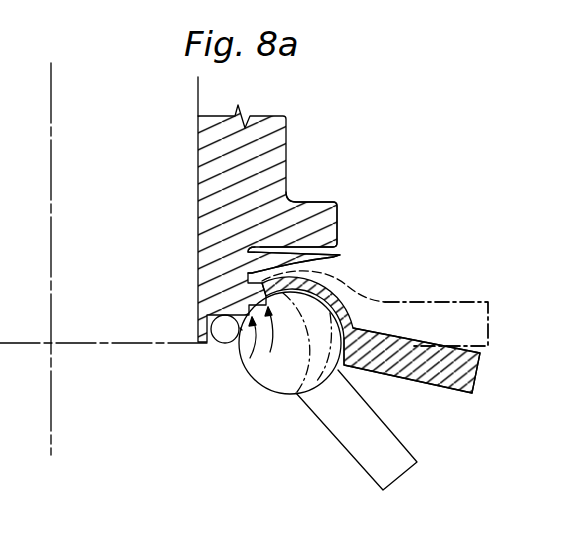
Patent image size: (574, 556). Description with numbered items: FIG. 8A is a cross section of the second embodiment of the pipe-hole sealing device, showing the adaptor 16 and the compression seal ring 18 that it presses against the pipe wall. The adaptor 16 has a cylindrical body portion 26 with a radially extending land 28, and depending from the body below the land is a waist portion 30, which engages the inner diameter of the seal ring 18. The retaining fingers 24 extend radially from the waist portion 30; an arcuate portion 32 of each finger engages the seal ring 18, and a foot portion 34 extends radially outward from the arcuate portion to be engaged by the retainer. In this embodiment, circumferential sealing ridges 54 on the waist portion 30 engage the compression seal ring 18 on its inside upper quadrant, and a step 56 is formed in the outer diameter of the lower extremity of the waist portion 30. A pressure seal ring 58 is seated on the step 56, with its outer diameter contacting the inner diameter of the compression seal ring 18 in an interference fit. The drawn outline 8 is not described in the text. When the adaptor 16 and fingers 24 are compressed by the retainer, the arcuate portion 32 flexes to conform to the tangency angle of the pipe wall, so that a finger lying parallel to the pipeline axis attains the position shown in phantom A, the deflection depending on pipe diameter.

The stem 8 is at (398, 476).
The adaptor 16 is at (353, 202).
The seal ring 18 is at (277, 393).
The retaining fingers 24 is at (385, 302).
The cylindrical body portion 26 is at (286, 184).
The land 28 is at (337, 228).
The waist portion 30 is at (308, 258).
The arcuate portion 32 is at (332, 292).
The foot portion 34 is at (476, 378).
The circumferential sealing ridges 54 is at (250, 358).
The step 56 is at (212, 346).
The pressure seal ring 58 is at (223, 342).
The phantom A is at (489, 322).